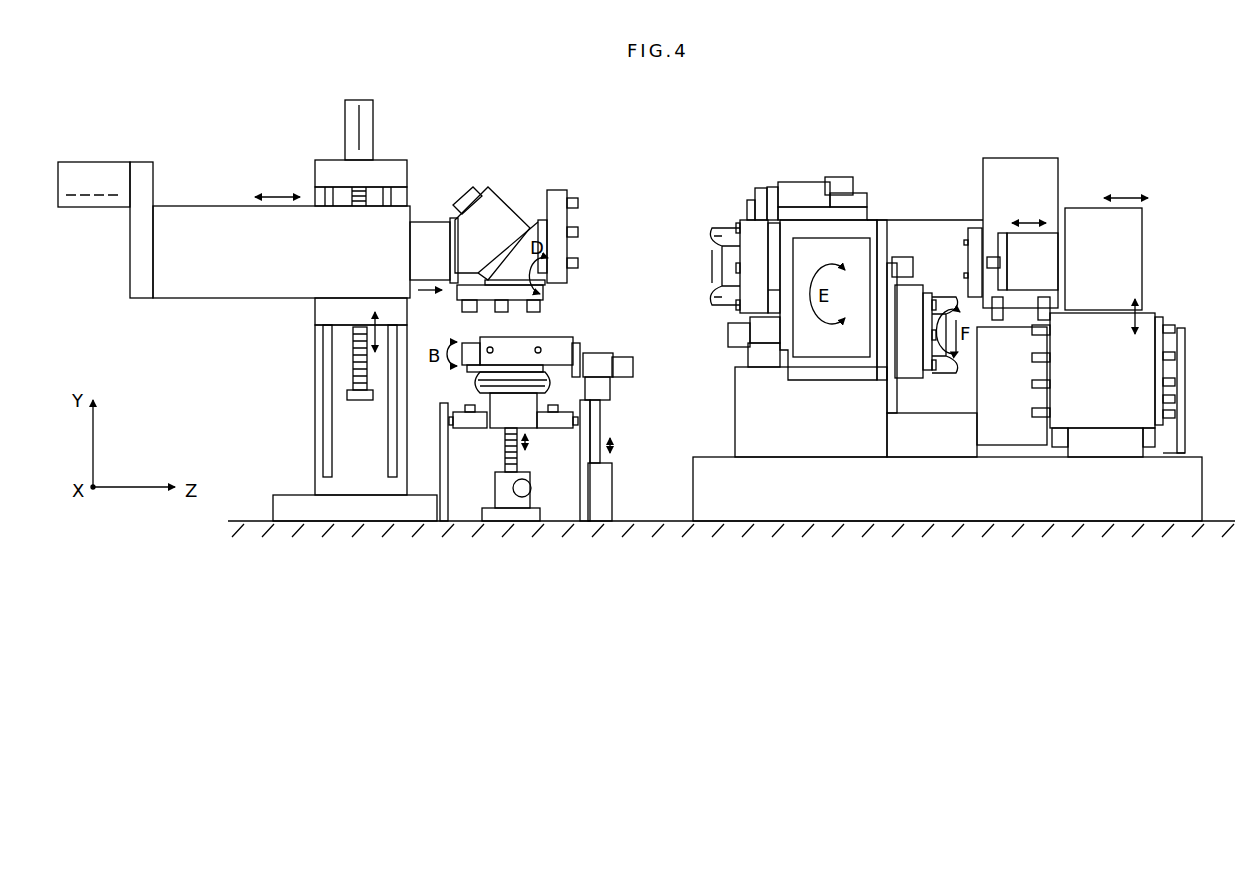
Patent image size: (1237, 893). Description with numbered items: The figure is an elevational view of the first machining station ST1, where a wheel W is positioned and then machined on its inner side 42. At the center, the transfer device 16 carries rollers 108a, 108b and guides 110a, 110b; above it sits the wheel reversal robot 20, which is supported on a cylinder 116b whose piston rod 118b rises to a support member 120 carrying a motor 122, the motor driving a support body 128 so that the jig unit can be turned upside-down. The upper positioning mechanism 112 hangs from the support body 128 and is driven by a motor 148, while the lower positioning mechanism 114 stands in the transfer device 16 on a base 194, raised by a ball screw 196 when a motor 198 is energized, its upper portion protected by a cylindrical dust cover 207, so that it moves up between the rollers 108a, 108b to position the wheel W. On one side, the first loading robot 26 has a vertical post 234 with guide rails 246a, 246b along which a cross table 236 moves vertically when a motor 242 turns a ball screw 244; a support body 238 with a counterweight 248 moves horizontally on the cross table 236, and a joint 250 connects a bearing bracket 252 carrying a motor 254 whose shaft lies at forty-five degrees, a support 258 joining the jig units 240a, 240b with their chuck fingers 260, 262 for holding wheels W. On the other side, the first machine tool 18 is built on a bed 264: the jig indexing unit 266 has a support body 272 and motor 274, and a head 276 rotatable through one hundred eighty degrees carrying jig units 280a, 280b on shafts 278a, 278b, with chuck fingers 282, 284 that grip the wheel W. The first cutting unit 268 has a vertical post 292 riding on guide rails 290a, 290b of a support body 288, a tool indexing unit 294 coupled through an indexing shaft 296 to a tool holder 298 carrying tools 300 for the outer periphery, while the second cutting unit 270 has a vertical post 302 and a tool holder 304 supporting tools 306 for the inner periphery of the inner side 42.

The transfer device 16 is at (437, 470).
The first machine tool 18 is at (961, 112).
The wheel reversal robot 20 is at (598, 345).
The first loading robot 26 is at (446, 138).
The inner side 42 is at (718, 287).
The roller 108a is at (453, 420).
The roller 108b is at (541, 423).
The guide 110a is at (468, 410).
The guide 110b is at (567, 411).
The upper positioning mechanism 112 is at (510, 368).
The lower positioning mechanism 114 is at (492, 465).
The cylinder 116b is at (605, 497).
The piston rod 118b is at (601, 463).
The support member 120 is at (612, 390).
The motor 122 is at (632, 368).
The support body 128 is at (560, 349).
The motor 148 is at (468, 345).
The base 194 is at (506, 498).
The ball screw 196 is at (518, 450).
The motor 198 is at (528, 490).
The cylindrical dust cover 207 is at (503, 423).
The vertical post 234 is at (320, 404).
The cross table 236 is at (325, 313).
The support body 238 is at (234, 225).
The jig unit 240a is at (406, 290).
The jig unit 240b is at (561, 183).
The motor 242 is at (358, 112).
The ball screw 244 is at (357, 362).
The guide rail 246a is at (328, 445).
The guide rail 246b is at (395, 452).
The counterweight 248 is at (107, 180).
The joint 250 is at (425, 235).
The bearing bracket 252 is at (497, 215).
The motor 254 is at (468, 196).
The support 258 is at (515, 256).
The chuck fingers 260 is at (542, 306).
The chuck fingers 262 is at (578, 203).
The bed 264 is at (940, 500).
The jig indexing unit 266 is at (823, 163).
The first cutting unit 268 is at (1080, 190).
The second cutting unit 270 is at (1150, 299).
The support body 272 is at (857, 212).
The motor 274 is at (800, 195).
The head 276 is at (831, 368).
The shaft 278a is at (773, 262).
The shaft 278b is at (890, 340).
The jig unit 280a is at (740, 206).
The jig unit 280b is at (915, 387).
The chuck fingers 282 is at (732, 313).
The chuck fingers 284 is at (925, 285).
The support body 288 is at (1180, 431).
The guide rail 290a is at (995, 323).
The guide rail 290b is at (1047, 300).
The vertical post 292 is at (1038, 165).
The tool indexing unit 294 is at (1058, 258).
The indexing shaft 296 is at (998, 264).
The tool holder 298 is at (985, 231).
The tools 300 is at (972, 247).
The vertical post 302 is at (1143, 218).
The tool holder 304 is at (1105, 416).
The tools 306 is at (1040, 415).
The first machining station ST1 is at (455, 533).
The wheel W is at (717, 231).